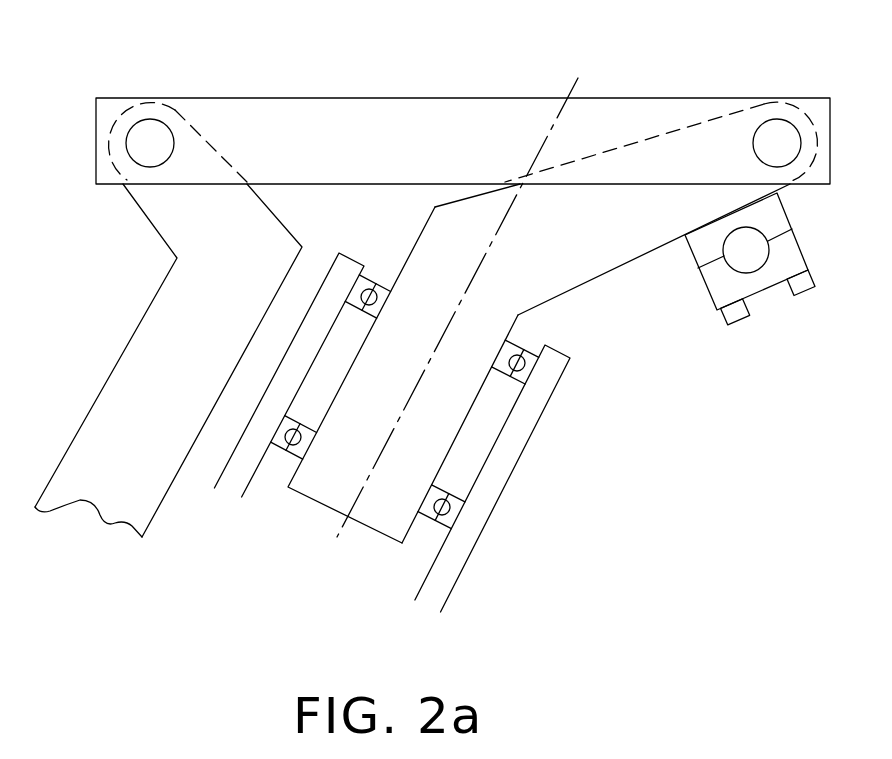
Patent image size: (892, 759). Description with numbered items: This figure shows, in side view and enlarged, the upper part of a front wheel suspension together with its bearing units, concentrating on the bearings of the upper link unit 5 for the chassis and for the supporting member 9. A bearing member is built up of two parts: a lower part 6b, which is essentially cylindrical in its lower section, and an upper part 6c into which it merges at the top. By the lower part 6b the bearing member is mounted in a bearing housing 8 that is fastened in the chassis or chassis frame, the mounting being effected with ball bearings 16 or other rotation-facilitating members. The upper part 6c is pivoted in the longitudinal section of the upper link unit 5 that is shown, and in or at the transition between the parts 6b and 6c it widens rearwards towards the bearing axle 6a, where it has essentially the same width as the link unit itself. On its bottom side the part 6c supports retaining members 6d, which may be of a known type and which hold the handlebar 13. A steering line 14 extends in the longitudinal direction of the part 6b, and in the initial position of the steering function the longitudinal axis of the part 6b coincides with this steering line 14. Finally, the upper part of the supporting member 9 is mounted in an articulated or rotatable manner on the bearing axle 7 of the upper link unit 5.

The upper link unit 5 is at (74, 164).
The bearing axle 6a is at (781, 128).
The bearing member part 6b is at (460, 433).
The bearing member part 6c is at (625, 242).
The retaining members 6d is at (800, 293).
The bearing axle 7 is at (153, 134).
The bearing housing 8 is at (547, 407).
The supporting member 9 is at (132, 363).
The handlebar 13 is at (763, 250).
The steering line 14 is at (340, 523).
The ball bearings 16 is at (420, 517).